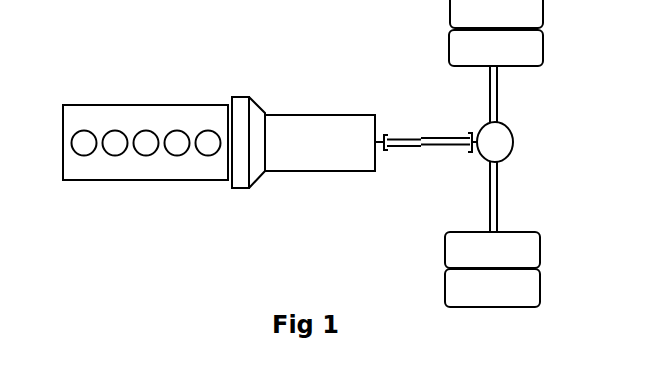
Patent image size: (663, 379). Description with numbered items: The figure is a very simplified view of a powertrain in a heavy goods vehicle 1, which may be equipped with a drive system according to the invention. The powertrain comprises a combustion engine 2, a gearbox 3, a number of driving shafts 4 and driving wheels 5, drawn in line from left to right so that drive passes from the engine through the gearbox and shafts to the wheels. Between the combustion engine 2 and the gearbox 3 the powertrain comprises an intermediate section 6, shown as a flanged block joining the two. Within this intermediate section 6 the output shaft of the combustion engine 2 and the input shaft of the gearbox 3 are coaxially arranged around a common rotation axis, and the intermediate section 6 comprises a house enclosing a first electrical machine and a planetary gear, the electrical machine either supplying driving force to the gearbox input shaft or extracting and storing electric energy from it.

The heavy goods vehicle 1 is at (183, 61).
The combustion engine 2 is at (133, 168).
The gearbox 3 is at (332, 152).
The driving shafts 4 is at (423, 142).
The driving wheels 5 is at (523, 45).
The intermediate section 6 is at (243, 135).